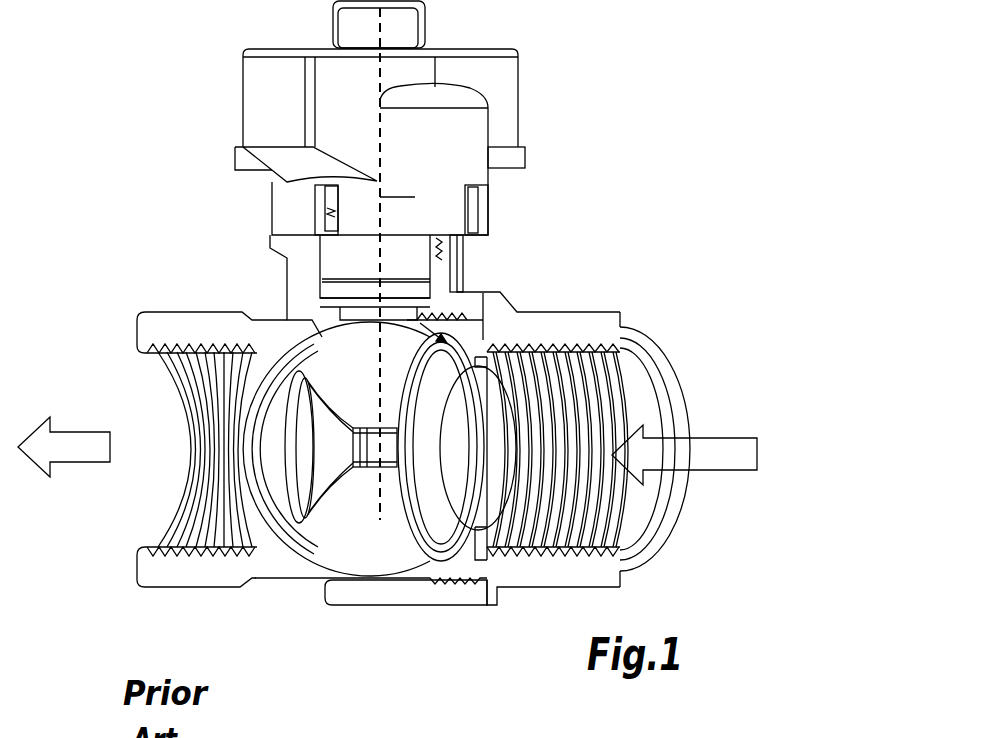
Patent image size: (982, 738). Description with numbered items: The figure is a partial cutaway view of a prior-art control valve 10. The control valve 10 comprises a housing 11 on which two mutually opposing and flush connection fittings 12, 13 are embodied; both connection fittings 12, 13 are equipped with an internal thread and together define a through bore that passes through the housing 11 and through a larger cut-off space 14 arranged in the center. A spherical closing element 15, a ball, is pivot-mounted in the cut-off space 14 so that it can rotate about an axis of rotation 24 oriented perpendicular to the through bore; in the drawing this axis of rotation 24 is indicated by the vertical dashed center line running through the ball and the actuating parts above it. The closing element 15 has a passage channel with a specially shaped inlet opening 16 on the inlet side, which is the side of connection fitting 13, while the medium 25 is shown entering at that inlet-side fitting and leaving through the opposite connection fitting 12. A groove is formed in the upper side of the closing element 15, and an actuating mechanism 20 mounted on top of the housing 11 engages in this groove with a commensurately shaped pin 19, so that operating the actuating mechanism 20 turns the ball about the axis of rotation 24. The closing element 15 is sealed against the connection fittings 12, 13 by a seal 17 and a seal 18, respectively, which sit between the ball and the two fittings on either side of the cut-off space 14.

The control valve 10 is at (622, 180).
The housing 11 is at (305, 312).
The connection fitting 12 is at (173, 328).
The connection fitting 13 is at (578, 320).
The cut-off space 14 is at (327, 570).
The closing element 15 is at (377, 540).
The inlet opening 16 is at (285, 452).
The seal 17 is at (238, 413).
The seal 18 is at (468, 354).
The pin 19 is at (403, 318).
The actuating mechanism 20 is at (258, 108).
The axis of rotation 24 is at (383, 197).
The medium 25 is at (710, 450).